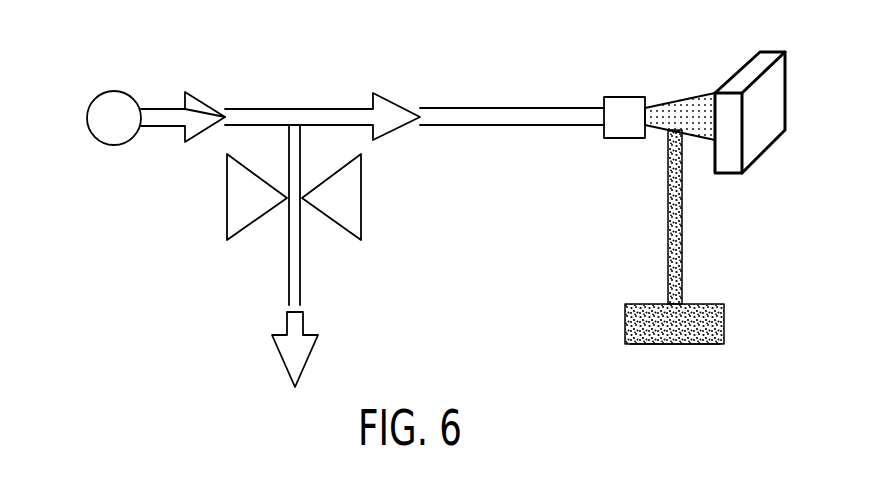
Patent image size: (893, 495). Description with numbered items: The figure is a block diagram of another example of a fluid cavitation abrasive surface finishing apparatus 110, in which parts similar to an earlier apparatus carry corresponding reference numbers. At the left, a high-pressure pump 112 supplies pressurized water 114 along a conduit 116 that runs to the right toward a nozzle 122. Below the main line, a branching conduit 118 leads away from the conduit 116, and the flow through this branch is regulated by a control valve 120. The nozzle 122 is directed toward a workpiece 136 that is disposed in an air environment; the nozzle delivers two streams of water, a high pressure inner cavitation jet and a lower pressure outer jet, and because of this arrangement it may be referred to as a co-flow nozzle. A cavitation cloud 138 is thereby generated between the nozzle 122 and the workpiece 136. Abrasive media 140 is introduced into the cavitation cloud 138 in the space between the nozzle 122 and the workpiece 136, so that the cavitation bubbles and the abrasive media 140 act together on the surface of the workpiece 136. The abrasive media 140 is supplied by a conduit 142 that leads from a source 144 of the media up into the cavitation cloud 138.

The fluid cavitation abrasive surface finishing apparatus 110 is at (441, 80).
The high-pressure pump 112 is at (88, 127).
The pressurized water 114 is at (262, 118).
The conduit 116 is at (296, 109).
The branching conduit 118 is at (302, 270).
The control valve 120 is at (227, 207).
The nozzle 122 is at (618, 140).
The workpiece 136 is at (741, 79).
The cavitation cloud 138 is at (658, 116).
The abrasive media 140 is at (705, 330).
The conduit 142 is at (682, 258).
The source 144 is at (673, 345).